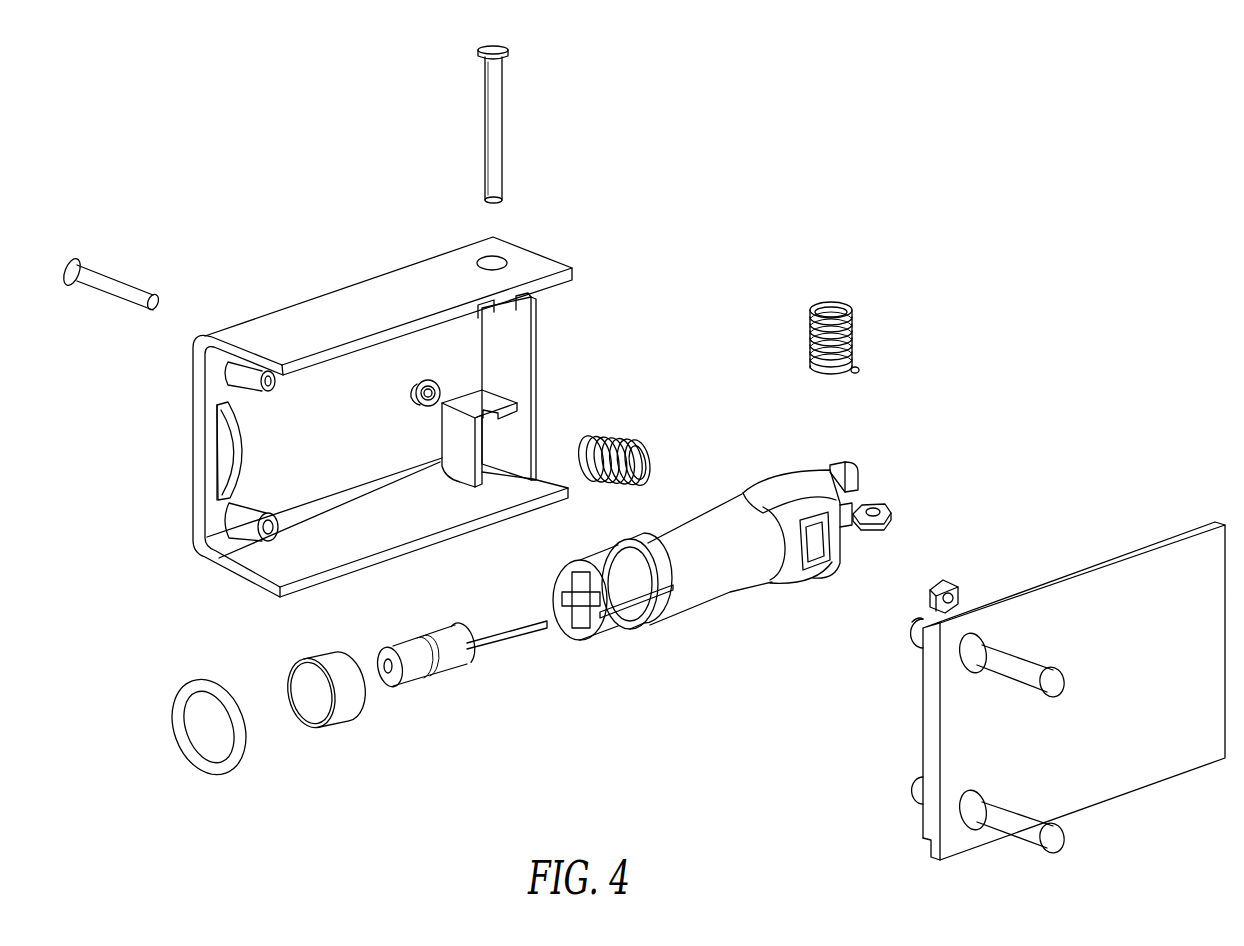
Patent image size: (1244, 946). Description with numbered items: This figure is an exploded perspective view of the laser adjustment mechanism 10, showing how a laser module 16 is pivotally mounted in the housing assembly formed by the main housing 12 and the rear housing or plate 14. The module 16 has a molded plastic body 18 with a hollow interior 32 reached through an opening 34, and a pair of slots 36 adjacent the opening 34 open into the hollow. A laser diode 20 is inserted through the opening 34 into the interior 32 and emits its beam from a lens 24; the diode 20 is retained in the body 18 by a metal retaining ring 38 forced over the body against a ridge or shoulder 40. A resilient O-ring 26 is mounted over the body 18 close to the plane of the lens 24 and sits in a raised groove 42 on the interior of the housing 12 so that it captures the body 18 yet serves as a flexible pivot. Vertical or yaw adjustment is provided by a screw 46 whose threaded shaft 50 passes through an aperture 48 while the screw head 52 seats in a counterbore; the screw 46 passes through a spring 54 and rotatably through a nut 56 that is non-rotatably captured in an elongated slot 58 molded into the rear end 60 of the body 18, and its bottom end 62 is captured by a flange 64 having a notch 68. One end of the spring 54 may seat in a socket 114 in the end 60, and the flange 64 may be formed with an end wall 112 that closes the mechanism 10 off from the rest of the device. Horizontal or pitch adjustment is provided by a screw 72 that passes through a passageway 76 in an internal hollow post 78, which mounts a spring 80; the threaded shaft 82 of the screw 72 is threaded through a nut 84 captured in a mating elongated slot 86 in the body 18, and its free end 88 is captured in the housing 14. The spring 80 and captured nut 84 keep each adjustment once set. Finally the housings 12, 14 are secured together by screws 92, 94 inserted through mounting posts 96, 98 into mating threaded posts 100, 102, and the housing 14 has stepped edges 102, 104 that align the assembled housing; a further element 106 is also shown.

The laser adjustment mechanism 10 is at (708, 270).
The main housing 12 is at (340, 411).
The rear housing or plate 14 is at (1135, 694).
The laser module 16 is at (710, 595).
The module body 18 is at (698, 564).
The laser diode 20 is at (440, 668).
The lens 24 is at (385, 661).
The O-ring 26 is at (207, 768).
The hollow interior 32 is at (572, 618).
The opening 34 is at (572, 638).
The slots 36 is at (560, 588).
The retaining ring 38 is at (342, 713).
The shoulder 40 is at (627, 545).
The raised groove 42 is at (240, 450).
The vertical adjustment screw 46 is at (533, 97).
The aperture 48 is at (489, 257).
The threaded shaft 50 is at (497, 145).
The screw head 52 is at (497, 47).
The spring 54 is at (832, 302).
The nut 56 is at (884, 505).
The elongated slot 58 is at (850, 528).
The rear end 60 is at (787, 490).
The bottom end 62 is at (495, 203).
The flange 64 is at (463, 467).
The notch 68 is at (490, 398).
The horizontal adjustment screw 72 is at (123, 267).
The passageway 76 is at (428, 400).
The hollow post 78 is at (418, 377).
The spring 80 is at (627, 445).
The threaded shaft 82 is at (110, 288).
The nut 84 is at (953, 582).
The elongated slot 86 is at (817, 553).
The free end 88 is at (158, 303).
The screw 92 is at (1007, 820).
The screw 94 is at (1015, 670).
The mounting post 96 is at (907, 793).
The mounting post 98 is at (910, 640).
The threaded post 100 is at (506, 312).
The threaded post 102 is at (233, 370).
The stepped edge 104 is at (925, 842).
The tab 106 is at (913, 621).
The end wall 112 is at (488, 369).
The socket 114 is at (845, 468).